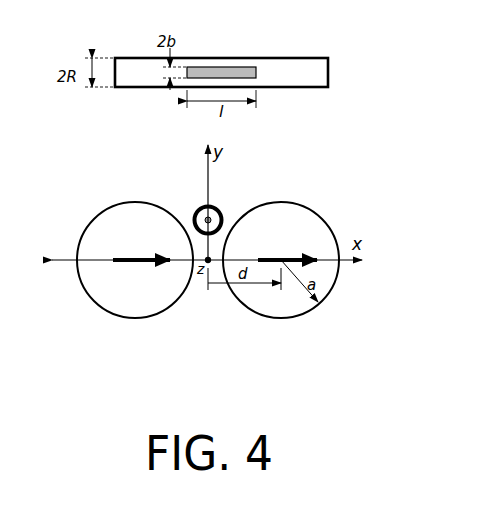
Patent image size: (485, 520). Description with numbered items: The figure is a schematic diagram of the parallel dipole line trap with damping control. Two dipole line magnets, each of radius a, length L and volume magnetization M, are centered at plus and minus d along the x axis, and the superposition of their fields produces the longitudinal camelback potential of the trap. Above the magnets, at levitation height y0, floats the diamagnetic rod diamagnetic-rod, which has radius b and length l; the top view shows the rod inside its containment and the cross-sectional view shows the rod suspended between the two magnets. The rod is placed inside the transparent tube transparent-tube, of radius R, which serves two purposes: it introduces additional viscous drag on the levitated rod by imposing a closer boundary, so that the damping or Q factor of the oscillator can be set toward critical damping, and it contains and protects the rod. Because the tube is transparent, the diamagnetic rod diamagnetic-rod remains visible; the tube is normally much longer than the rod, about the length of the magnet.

The transparent tube transparent-tube is at (190, 204).
The diamagnetic rod diamagnetic-rod is at (263, 73).